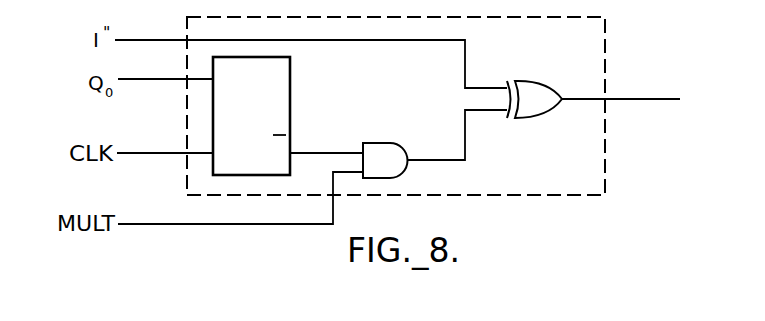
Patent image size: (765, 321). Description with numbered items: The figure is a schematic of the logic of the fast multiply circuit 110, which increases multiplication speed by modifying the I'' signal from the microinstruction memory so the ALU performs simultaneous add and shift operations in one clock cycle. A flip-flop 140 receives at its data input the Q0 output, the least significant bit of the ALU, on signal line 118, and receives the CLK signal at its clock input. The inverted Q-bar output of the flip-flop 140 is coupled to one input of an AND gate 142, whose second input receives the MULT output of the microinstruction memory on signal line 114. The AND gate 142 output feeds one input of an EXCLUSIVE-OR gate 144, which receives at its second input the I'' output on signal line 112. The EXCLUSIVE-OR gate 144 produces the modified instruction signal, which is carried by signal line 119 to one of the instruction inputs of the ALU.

The fast multiply circuit 110 is at (606, 43).
The signal line 112 is at (138, 40).
The signal line 114 is at (233, 224).
The signal line 118 is at (138, 79).
The signal line 119 is at (643, 99).
The flip-flop 140 is at (290, 83).
The AND gate 142 is at (390, 143).
The EXCLUSIVE-OR gate 144 is at (543, 82).